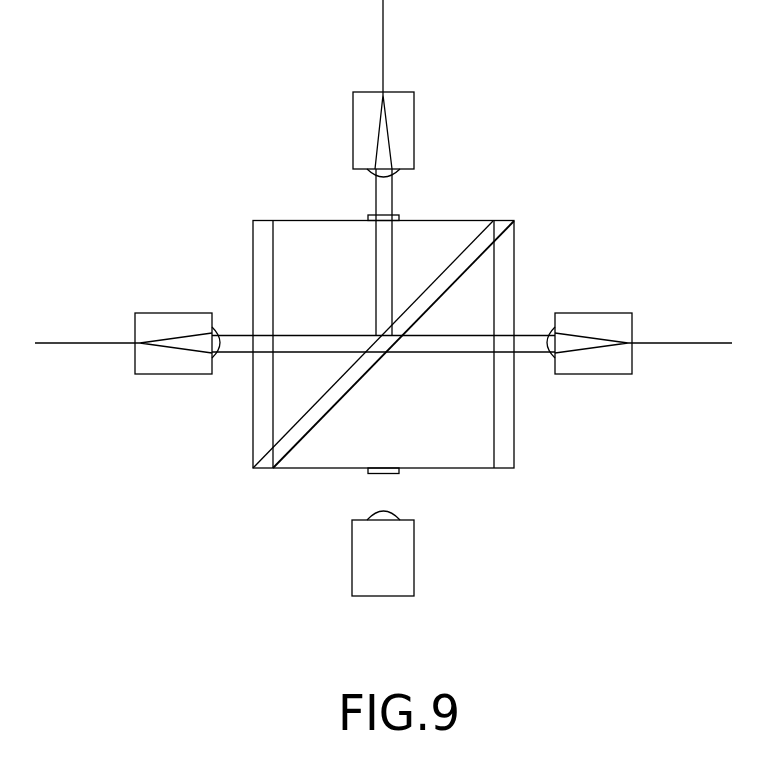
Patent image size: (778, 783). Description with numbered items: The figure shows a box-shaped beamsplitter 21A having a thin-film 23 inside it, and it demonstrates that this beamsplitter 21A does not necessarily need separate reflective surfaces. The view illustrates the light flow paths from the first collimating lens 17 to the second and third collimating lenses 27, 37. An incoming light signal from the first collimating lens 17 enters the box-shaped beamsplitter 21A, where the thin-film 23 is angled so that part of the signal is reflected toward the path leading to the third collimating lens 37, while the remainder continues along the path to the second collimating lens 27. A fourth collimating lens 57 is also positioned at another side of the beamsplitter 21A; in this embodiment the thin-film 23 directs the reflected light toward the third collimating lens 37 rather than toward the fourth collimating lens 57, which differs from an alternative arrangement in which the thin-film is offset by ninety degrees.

The first collimating lens 17 is at (173, 374).
The second collimating lens 27 is at (597, 374).
The third collimating lens 37 is at (414, 135).
The fourth collimating lens 57 is at (414, 568).
The thin-film 23 is at (303, 415).
The box-shaped beamsplitter 21A is at (417, 367).